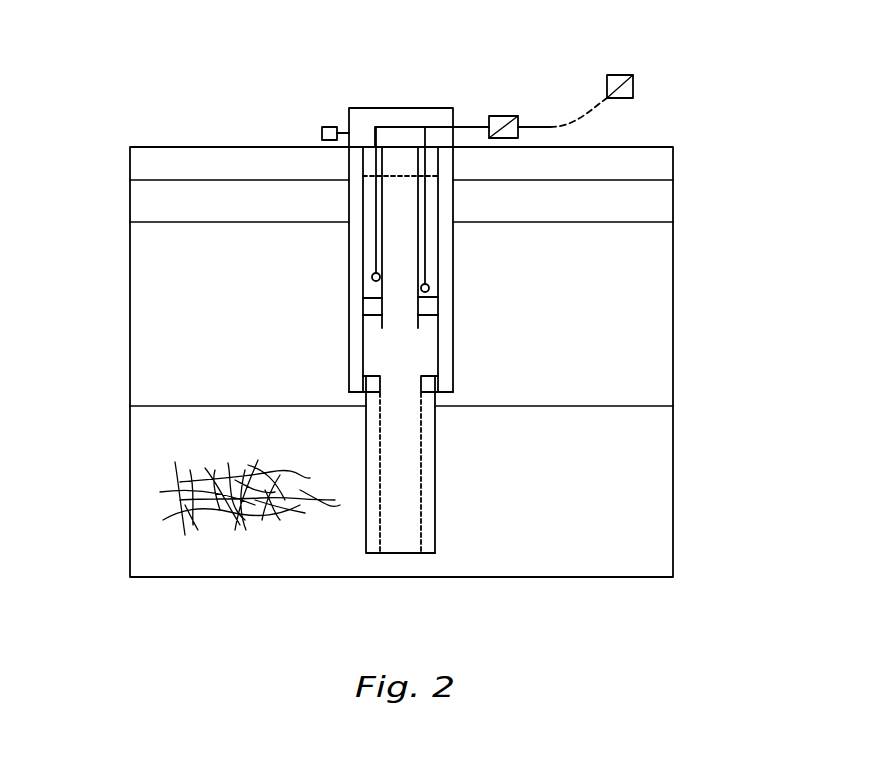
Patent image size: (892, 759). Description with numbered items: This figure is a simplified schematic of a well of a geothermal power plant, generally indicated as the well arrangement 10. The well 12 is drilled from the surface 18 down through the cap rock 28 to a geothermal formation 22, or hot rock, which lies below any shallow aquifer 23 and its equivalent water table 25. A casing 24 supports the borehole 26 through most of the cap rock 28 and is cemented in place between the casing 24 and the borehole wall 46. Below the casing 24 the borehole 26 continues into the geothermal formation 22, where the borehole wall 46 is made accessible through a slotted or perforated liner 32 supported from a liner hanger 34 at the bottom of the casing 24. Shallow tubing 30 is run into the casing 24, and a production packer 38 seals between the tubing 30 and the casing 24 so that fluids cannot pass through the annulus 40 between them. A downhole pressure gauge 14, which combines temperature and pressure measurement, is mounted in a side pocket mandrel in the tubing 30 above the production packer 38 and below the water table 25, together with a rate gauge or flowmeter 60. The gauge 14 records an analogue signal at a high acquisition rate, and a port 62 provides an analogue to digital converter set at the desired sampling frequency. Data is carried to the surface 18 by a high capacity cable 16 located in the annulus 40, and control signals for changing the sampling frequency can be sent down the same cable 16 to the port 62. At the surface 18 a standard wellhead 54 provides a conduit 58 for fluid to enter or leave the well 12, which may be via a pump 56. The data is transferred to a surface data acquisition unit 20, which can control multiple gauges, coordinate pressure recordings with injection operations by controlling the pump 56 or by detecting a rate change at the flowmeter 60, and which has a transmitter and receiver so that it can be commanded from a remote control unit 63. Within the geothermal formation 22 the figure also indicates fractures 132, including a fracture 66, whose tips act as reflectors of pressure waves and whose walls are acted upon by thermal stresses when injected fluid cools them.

The well of a geothermal power plant 10 is at (697, 92).
The well 12 is at (482, 163).
The downhole pressure gauge 14 is at (425, 296).
The cable 16 is at (453, 240).
The surface 18 is at (645, 146).
The surface data acquisition unit 20 is at (505, 116).
The geothermal formation 22 is at (192, 557).
The shallow aquifer 23 is at (140, 200).
The casing 24 is at (440, 342).
The water table 25 is at (363, 176).
The borehole 26 is at (358, 362).
The cap rock 28 is at (140, 336).
The shallow tubing 30 is at (348, 212).
The slotted or perforated liner 32 is at (370, 530).
The liner hanger 34 is at (348, 384).
The production packer 38 is at (363, 307).
The annulus 40 is at (363, 260).
The borehole wall 46 is at (438, 382).
The wellhead 54 is at (367, 120).
The pump 56 is at (322, 133).
The conduit 58 is at (343, 130).
The flowmeter 60 is at (372, 278).
The port 62 is at (429, 288).
The remote control unit 63 is at (632, 76).
The fracture 66 is at (168, 515).
The fractures 132 is at (232, 525).